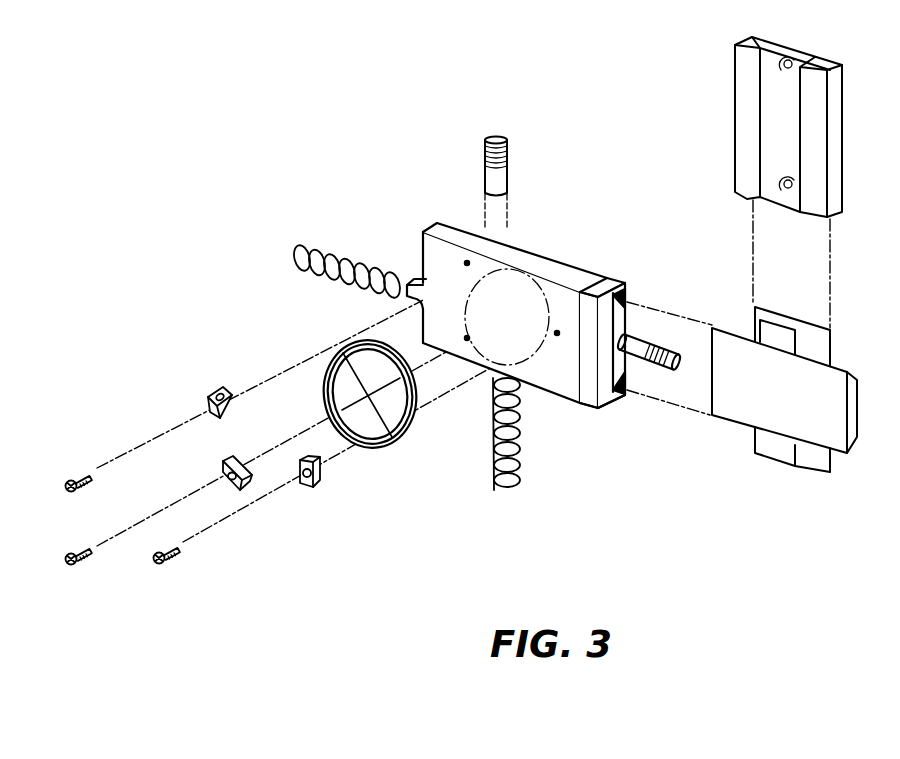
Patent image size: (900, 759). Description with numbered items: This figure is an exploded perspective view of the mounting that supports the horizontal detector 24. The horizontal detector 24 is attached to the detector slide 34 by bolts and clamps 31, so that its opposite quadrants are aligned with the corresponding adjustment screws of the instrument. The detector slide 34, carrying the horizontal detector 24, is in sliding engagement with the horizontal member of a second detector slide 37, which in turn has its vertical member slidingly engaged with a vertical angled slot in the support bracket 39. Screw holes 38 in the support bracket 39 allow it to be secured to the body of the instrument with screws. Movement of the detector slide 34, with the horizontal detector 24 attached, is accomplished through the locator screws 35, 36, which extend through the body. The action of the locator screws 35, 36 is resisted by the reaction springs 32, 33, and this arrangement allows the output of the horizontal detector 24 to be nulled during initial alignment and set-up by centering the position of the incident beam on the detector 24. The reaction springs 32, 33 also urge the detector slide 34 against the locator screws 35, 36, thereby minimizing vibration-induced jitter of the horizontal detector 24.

The horizontal detector 24 is at (328, 350).
The bolts and clamps 31 is at (209, 400).
The reaction spring 32 is at (521, 445).
The reaction spring 33 is at (312, 244).
The detector slide 34 is at (630, 283).
The locator screw 35 is at (643, 340).
The locator screw 36 is at (483, 145).
The detector slide 37 is at (830, 442).
The screw holes 38 is at (465, 262).
The support bracket 39 is at (828, 64).